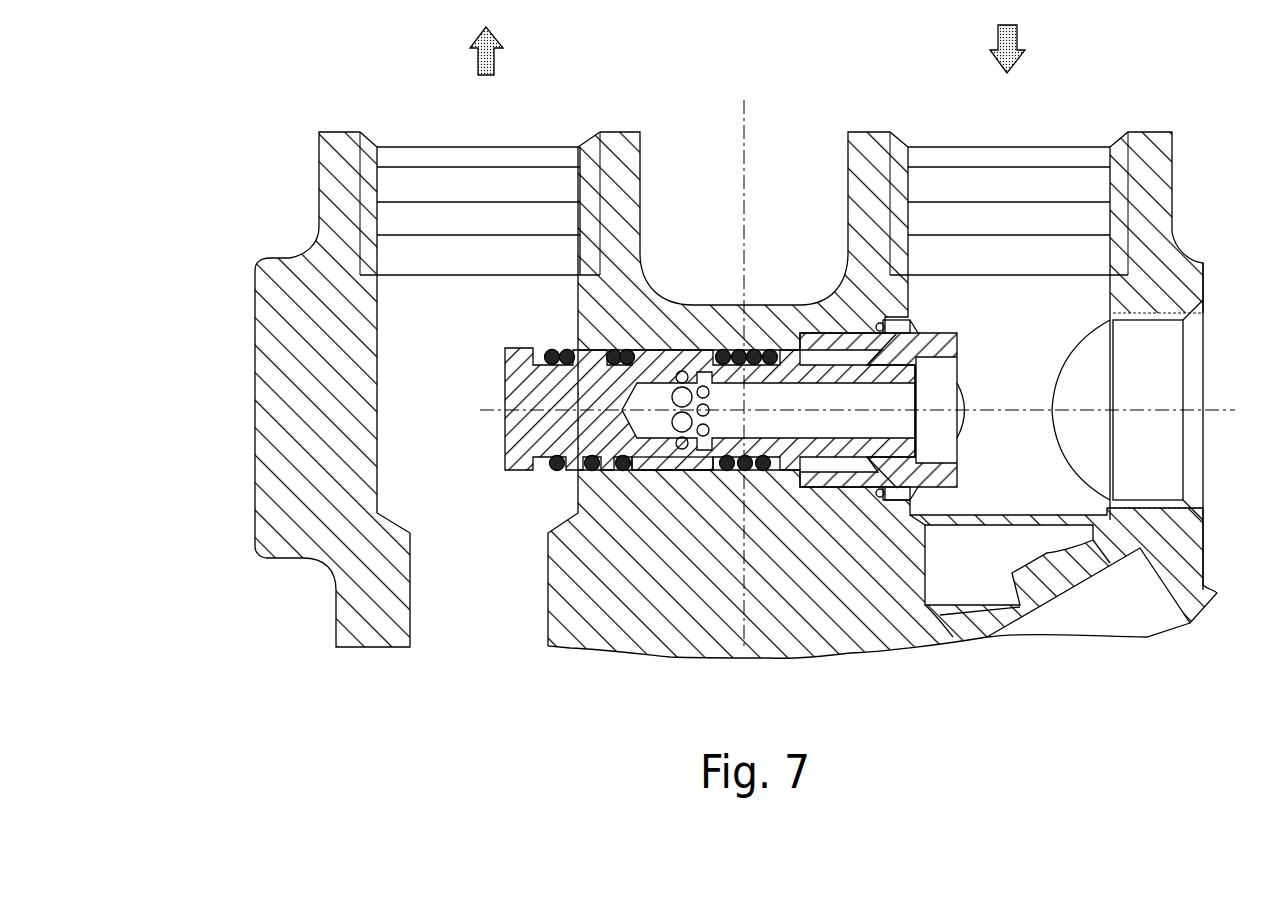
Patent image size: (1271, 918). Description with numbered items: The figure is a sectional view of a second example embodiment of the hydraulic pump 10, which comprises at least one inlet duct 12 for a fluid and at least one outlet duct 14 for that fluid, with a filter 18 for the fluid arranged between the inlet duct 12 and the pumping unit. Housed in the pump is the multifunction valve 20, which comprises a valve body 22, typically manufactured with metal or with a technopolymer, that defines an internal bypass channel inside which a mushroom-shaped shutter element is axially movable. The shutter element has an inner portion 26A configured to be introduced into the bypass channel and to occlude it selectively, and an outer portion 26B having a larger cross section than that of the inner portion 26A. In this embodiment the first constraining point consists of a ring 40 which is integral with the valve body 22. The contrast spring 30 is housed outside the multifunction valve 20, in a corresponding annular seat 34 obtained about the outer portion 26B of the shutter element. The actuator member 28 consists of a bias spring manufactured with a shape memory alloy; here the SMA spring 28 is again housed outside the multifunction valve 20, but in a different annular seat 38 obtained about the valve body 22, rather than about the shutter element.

The hydraulic pump 10 is at (226, 538).
The inlet duct 12 is at (1094, 132).
The outlet duct 14 is at (534, 132).
The filter 18 is at (1135, 612).
The multifunction valve 20 is at (678, 340).
The valve body 22 is at (898, 458).
The inner portion of the shutter element 26A is at (650, 377).
The outer portion of the shutter element 26B is at (518, 463).
The actuator member 28 is at (765, 462).
The contrast spring 30 is at (587, 472).
The annular seat 34 is at (588, 362).
The annular seat 38 is at (783, 362).
The ring 40 is at (667, 462).